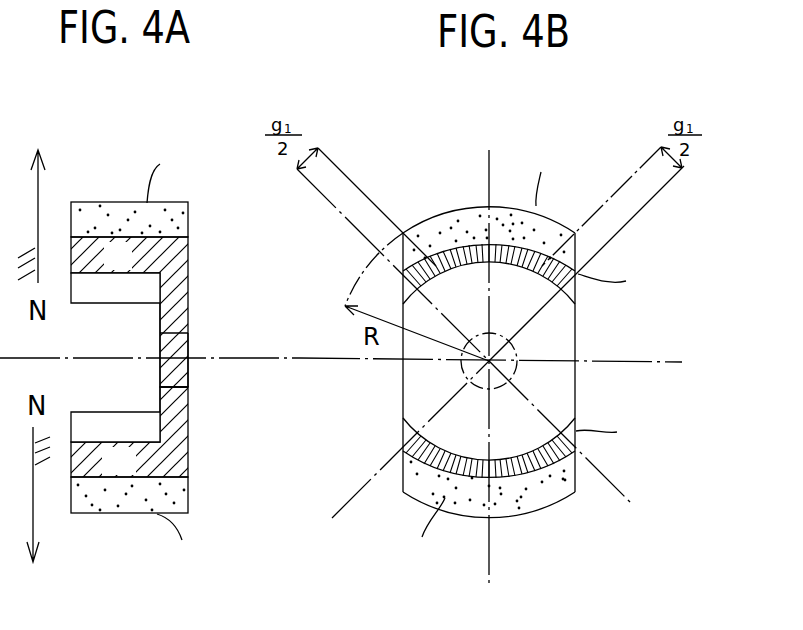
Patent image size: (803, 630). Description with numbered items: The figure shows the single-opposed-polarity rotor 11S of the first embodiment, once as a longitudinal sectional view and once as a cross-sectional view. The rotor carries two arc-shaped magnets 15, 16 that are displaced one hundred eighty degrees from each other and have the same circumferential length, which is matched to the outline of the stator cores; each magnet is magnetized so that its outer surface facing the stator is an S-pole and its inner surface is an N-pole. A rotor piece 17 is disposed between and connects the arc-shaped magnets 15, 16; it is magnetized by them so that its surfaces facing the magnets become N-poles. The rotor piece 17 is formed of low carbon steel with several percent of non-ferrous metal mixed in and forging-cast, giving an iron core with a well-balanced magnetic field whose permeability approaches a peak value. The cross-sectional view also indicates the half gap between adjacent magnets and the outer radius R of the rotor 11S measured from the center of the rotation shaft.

In FIG. 4A, the arc-shaped magnet 15 is at (97, 221).
In FIG. 4B, the arc-shaped magnet 15 is at (447, 233).
In FIG. 4A, the arc-shaped magnet 16 is at (107, 493).
In FIG. 4B, the arc-shaped magnet 16 is at (535, 497).
In FIG. 4A, the rotor piece 17 is at (162, 402).
In FIG. 4B, the rotor piece 17 is at (558, 349).
In FIG. 4A, the single-opposed-polarity rotor 11S is at (262, 341).
In FIG. 4B, the single-opposed-polarity rotor 11S is at (718, 340).